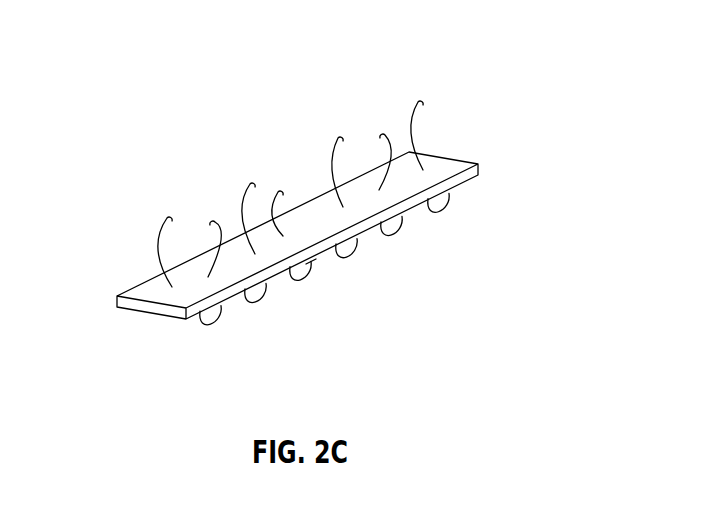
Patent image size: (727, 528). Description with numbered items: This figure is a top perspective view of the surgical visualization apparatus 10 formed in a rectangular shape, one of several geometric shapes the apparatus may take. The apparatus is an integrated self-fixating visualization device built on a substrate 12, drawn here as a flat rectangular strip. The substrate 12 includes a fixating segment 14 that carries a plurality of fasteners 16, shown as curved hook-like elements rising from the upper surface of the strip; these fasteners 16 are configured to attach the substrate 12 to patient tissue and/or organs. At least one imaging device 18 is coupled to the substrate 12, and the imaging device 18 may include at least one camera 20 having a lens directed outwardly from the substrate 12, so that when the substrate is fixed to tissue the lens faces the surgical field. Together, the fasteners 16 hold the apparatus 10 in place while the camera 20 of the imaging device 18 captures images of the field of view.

The surgical visualization apparatus 10 is at (310, 183).
The substrate 12 is at (148, 307).
The fixating segment 14 is at (425, 132).
The fasteners 16 is at (250, 183).
The imaging device 18 is at (300, 284).
The camera 20 is at (312, 262).